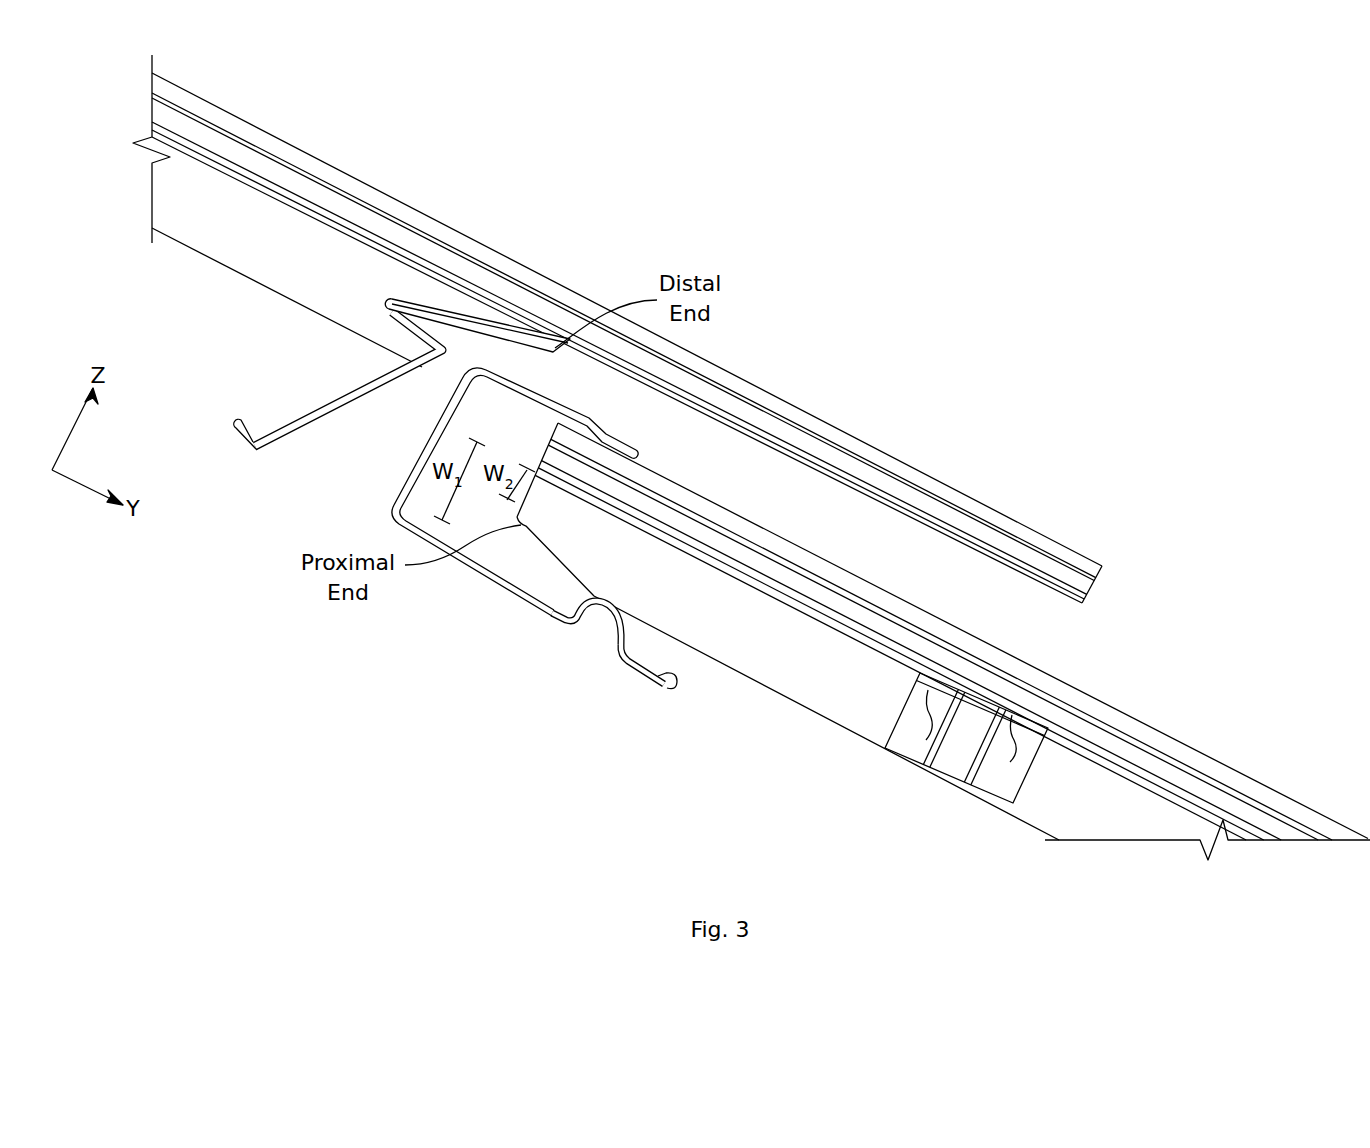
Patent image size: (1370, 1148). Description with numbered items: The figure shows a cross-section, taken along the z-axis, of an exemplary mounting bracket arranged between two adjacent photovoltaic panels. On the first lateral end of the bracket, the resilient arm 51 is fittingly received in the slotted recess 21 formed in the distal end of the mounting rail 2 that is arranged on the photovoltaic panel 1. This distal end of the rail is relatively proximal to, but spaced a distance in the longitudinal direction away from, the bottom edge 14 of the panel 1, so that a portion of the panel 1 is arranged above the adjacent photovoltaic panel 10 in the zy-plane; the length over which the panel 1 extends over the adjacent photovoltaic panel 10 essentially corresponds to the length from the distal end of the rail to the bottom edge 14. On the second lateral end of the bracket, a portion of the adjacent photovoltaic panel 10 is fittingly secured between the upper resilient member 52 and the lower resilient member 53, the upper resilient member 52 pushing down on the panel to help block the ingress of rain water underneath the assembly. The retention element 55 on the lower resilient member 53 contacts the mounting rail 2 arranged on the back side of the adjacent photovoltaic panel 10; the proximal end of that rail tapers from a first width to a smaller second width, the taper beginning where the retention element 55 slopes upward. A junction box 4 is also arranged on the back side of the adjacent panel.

The photovoltaic panel 1 is at (837, 436).
The mounting rail 2 is at (253, 284).
The junction box 4 is at (942, 787).
The adjacent photovoltaic panel 10 is at (915, 604).
The bottom edge 14 is at (1104, 586).
The slotted recess 21 is at (410, 329).
The resilient arm 51 is at (417, 306).
The upper resilient member 52 is at (643, 450).
The lower resilient member 53 is at (491, 585).
The retention element 55 is at (617, 623).